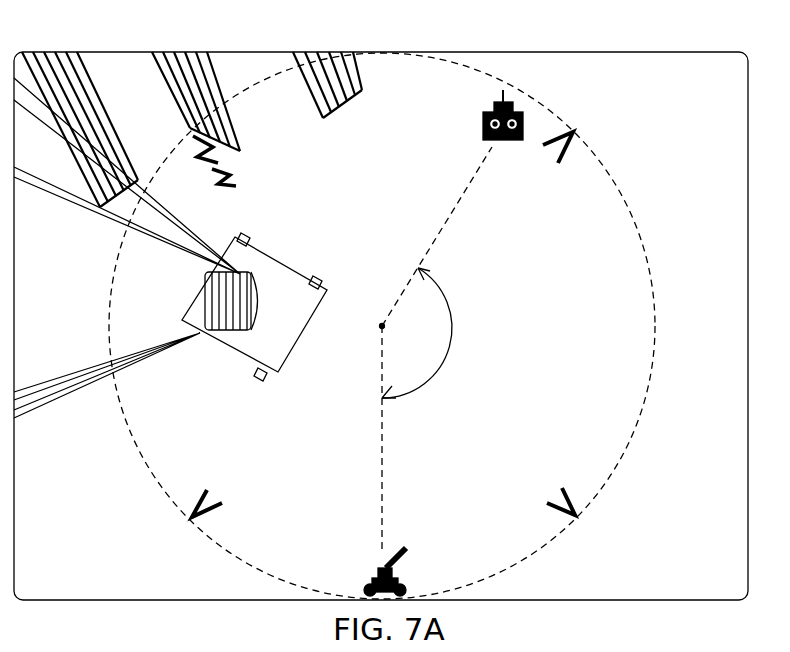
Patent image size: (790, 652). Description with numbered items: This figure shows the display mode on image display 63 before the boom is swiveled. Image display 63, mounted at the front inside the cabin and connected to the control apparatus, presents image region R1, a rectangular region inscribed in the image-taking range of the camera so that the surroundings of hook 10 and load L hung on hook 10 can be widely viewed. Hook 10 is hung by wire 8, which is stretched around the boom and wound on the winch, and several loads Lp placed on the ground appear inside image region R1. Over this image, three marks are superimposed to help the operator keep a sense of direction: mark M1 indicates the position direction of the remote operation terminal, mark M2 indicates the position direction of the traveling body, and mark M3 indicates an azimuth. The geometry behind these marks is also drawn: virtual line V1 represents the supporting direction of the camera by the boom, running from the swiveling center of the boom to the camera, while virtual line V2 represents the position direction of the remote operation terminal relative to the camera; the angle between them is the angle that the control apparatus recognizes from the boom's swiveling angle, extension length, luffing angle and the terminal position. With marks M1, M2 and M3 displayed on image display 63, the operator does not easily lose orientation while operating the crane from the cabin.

The image display 63 is at (698, 52).
The image region R1 is at (702, 546).
The load Lp is at (137, 162).
The mark M3 is at (240, 181).
The load L is at (285, 268).
The hook 10 is at (200, 305).
The wire 8 is at (160, 355).
The mark M1 is at (511, 160).
The virtual line V2 is at (461, 202).
The virtual line V1 is at (380, 462).
The reference point P is at (380, 330).
The mark M2 is at (406, 528).